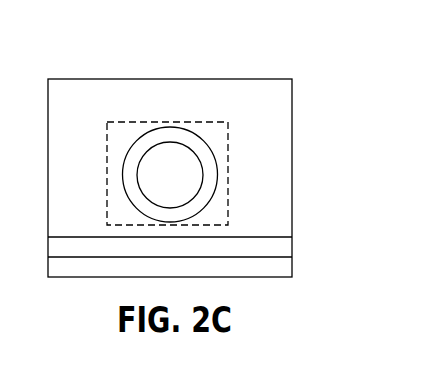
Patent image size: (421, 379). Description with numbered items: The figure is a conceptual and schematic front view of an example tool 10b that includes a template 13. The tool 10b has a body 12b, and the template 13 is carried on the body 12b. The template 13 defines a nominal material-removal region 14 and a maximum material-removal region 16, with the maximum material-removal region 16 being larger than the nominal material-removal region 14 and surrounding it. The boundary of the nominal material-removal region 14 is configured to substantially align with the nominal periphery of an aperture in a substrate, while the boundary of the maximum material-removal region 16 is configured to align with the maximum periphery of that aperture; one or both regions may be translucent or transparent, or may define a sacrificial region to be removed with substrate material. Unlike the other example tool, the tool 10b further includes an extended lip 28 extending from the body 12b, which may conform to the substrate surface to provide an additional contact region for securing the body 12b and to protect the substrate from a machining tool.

The tool 10b is at (420, 63).
The body 12b is at (253, 208).
The template 13 is at (188, 227).
The nominal material-removal region 14 is at (204, 177).
The maximum material-removal region 16 is at (210, 144).
The extended lip 28 is at (263, 243).